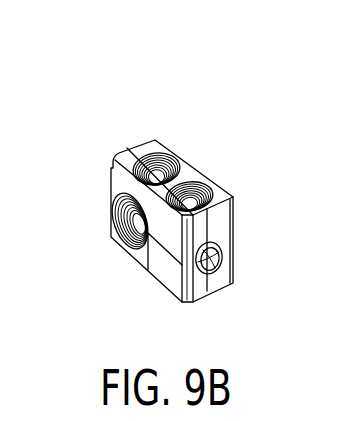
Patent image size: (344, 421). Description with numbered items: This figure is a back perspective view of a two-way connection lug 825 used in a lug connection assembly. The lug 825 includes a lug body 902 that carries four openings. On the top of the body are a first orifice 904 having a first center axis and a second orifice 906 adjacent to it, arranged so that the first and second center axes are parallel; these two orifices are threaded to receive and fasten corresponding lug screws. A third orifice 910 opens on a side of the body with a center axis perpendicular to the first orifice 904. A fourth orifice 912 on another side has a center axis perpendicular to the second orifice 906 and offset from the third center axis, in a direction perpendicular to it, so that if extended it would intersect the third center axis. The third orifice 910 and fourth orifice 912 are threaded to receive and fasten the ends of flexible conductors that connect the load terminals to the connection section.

The two-way connection lug 825 is at (184, 97).
The lug body 902 is at (112, 188).
The first orifice 904 is at (212, 190).
The second orifice 906 is at (181, 168).
The third orifice 910 is at (112, 228).
The fourth orifice 912 is at (222, 266).